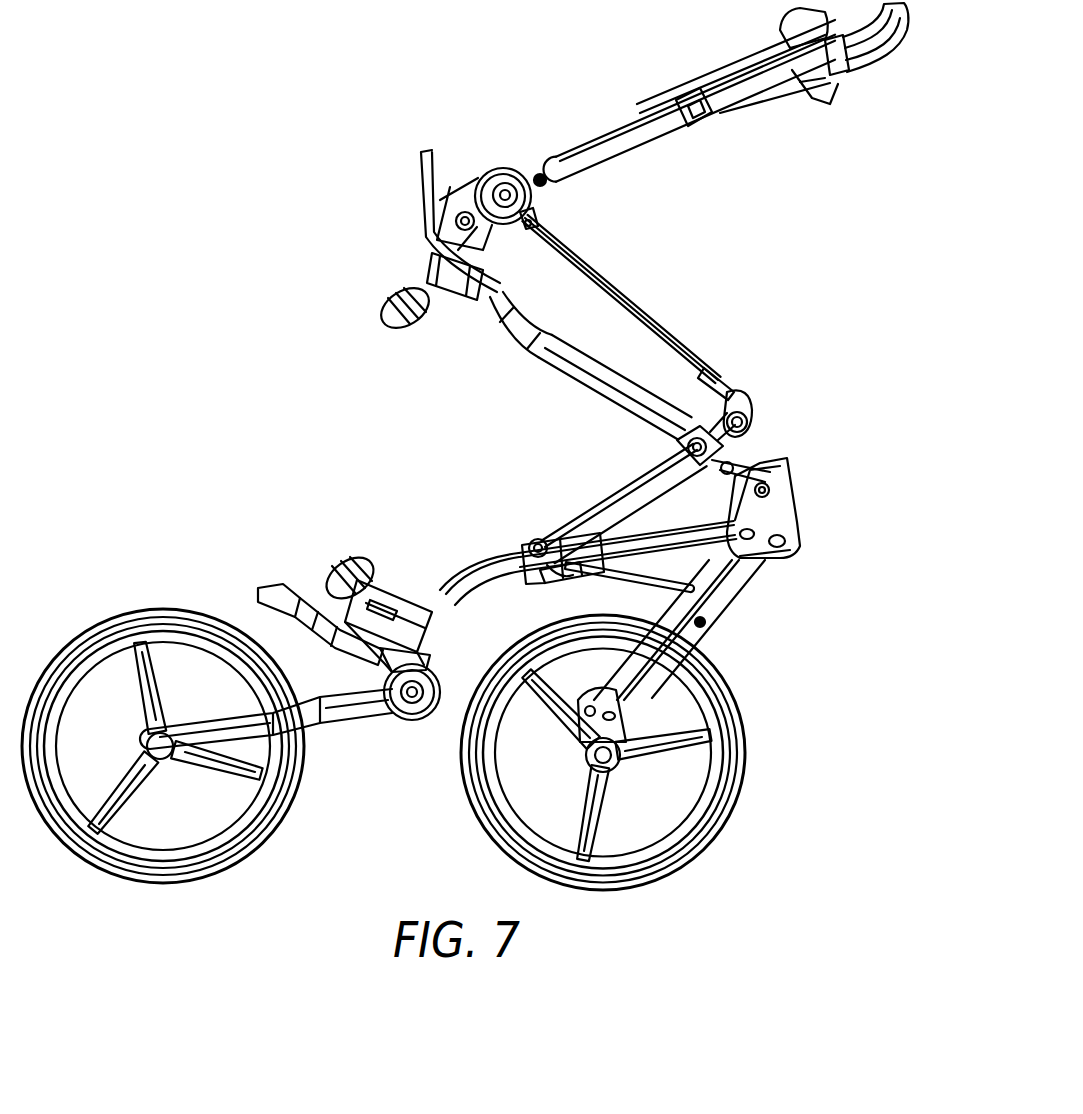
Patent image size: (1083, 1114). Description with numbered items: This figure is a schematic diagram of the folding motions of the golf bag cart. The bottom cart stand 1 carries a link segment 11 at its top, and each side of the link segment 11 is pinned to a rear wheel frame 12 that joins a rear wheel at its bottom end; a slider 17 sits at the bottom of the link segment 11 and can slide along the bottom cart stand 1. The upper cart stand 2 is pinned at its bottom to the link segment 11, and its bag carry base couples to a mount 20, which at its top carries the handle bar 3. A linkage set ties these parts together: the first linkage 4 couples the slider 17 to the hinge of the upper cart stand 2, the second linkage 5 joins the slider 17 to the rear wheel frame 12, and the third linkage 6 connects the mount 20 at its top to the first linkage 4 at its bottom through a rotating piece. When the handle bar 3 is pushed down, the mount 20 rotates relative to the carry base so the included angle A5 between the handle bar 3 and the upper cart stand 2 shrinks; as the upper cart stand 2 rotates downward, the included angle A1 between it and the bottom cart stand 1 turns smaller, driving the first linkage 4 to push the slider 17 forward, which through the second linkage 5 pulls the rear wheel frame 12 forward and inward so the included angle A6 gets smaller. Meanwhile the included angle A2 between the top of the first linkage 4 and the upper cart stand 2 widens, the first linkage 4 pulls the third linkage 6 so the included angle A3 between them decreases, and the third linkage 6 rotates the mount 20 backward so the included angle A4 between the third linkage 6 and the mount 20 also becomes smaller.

The bottom cart stand 1 is at (462, 577).
The upper cart stand 2 is at (547, 348).
The handle bar 3 is at (607, 142).
The first linkage 4 is at (607, 497).
The second linkage 5 is at (593, 574).
The third linkage 6 is at (592, 277).
The link segment 11 is at (778, 537).
The rear wheel frame 12 is at (740, 602).
The slider 17 is at (580, 550).
The mount 20 is at (495, 168).
The included angle between the upper cart stand and the bottom cart stand A1 is at (700, 463).
The included angle between the top of the first linkage and the upper cart stand A2 is at (717, 420).
The included angle between the first linkage and the third linkage A3 is at (650, 460).
The included angle between the third linkage and the mount A4 is at (594, 171).
The included angle between the handle bar and the upper cart stand A5 is at (589, 362).
The included angle between the rear wheel frame and the bottom cart stand A6 is at (653, 563).